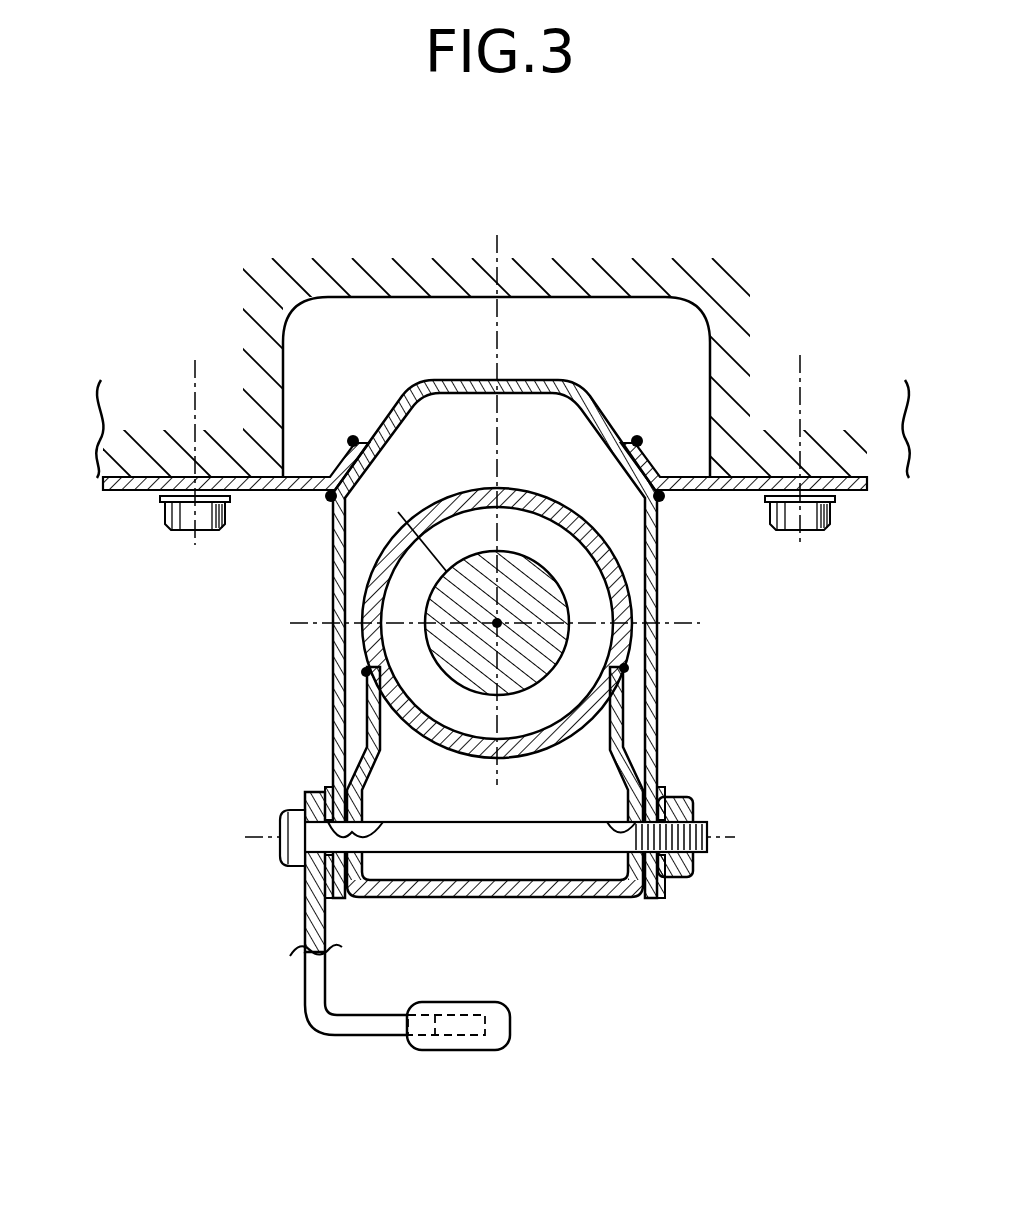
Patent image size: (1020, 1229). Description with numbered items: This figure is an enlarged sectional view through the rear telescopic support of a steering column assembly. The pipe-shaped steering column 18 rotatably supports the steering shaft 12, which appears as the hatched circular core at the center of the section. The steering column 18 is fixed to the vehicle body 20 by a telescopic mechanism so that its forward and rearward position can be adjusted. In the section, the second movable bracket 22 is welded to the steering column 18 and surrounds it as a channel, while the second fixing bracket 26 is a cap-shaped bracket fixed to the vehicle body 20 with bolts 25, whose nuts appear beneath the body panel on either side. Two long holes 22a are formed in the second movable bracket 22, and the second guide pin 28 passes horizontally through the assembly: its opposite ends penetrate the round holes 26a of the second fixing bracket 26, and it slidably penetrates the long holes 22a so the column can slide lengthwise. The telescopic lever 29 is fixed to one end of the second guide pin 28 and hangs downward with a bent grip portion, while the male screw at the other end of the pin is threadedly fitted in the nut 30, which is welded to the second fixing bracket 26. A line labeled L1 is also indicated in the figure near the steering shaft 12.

The steering shaft 12 is at (525, 575).
The steering column 18 is at (450, 507).
The vehicle body 20 is at (122, 484).
The second movable bracket 22 is at (547, 906).
The long holes 22a is at (367, 827).
The bolts 25 is at (190, 532).
The second fixing bracket 26 is at (322, 672).
The round holes 26a is at (300, 826).
The second guide pin 28 is at (480, 824).
The telescopic lever 29 is at (338, 1027).
The nut 30 is at (678, 862).
The reference line L1 is at (402, 528).